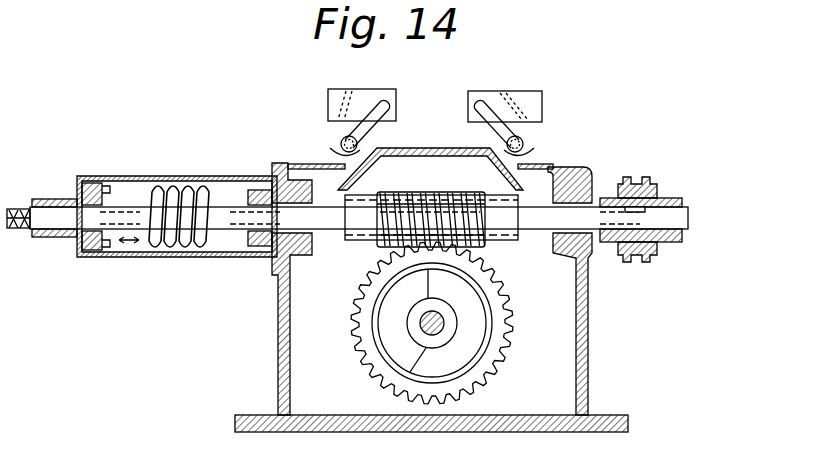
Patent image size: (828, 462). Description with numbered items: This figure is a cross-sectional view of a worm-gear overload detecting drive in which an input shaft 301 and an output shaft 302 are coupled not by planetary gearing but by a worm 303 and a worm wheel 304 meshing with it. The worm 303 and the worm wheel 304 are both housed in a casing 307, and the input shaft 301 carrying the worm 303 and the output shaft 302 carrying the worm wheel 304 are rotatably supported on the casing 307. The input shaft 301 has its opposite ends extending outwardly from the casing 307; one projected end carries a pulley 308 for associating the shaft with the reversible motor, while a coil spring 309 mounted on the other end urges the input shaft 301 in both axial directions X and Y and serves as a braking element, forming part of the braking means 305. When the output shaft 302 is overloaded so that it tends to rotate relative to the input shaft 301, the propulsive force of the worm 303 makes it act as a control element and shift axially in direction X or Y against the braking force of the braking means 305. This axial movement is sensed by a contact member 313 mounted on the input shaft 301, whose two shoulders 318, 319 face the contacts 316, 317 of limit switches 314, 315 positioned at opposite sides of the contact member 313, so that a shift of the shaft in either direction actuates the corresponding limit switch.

The input shaft 301 is at (688, 218).
The output shaft 302 is at (444, 324).
The worm 303 is at (432, 200).
The worm wheel 304 is at (378, 372).
The braking means 305 is at (170, 176).
The casing 307 is at (588, 326).
The pulley 308 is at (655, 190).
The coil spring 309 is at (180, 250).
The contact member 313 is at (397, 148).
The limit switch 314 is at (500, 91).
The limit switch 315 is at (346, 90).
The contact 316 is at (524, 135).
The contact 317 is at (340, 135).
The shoulder 318 is at (522, 152).
The shoulder 319 is at (340, 153).